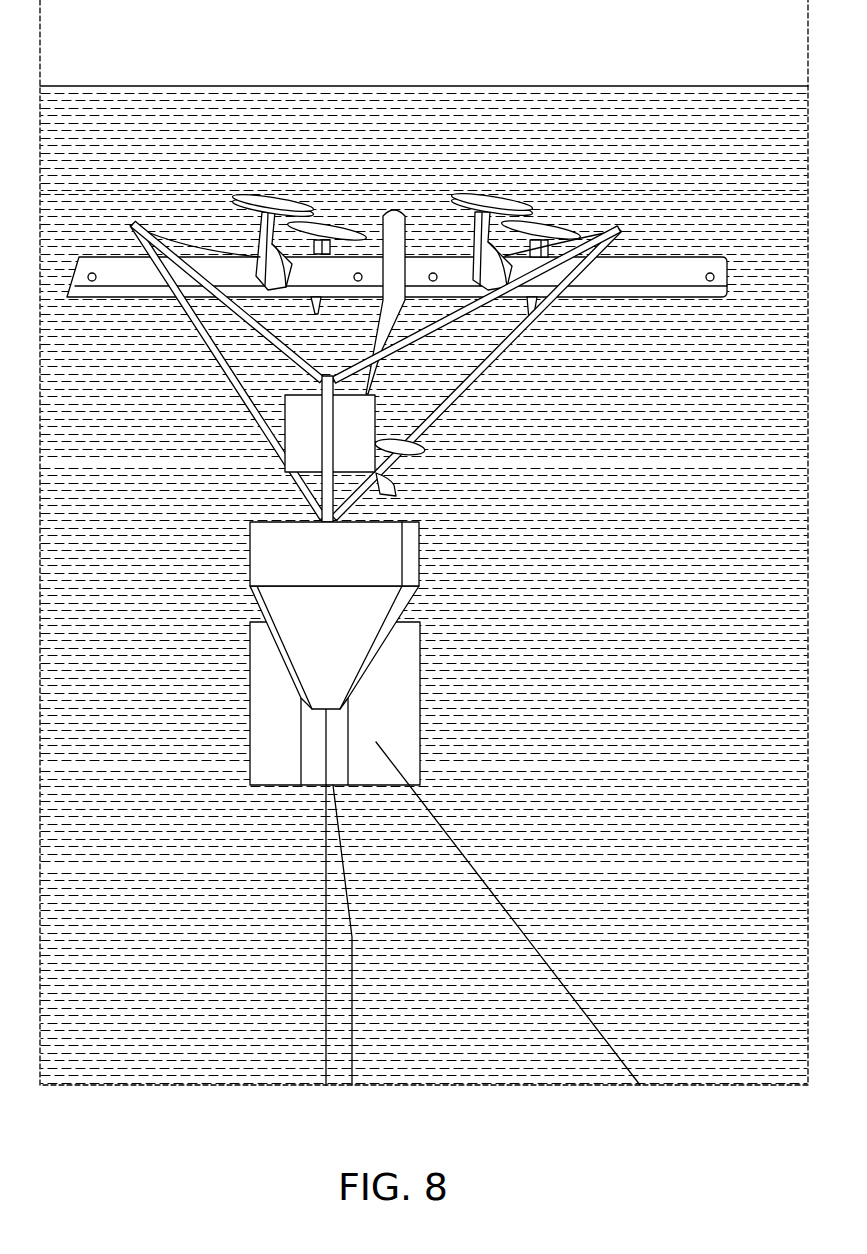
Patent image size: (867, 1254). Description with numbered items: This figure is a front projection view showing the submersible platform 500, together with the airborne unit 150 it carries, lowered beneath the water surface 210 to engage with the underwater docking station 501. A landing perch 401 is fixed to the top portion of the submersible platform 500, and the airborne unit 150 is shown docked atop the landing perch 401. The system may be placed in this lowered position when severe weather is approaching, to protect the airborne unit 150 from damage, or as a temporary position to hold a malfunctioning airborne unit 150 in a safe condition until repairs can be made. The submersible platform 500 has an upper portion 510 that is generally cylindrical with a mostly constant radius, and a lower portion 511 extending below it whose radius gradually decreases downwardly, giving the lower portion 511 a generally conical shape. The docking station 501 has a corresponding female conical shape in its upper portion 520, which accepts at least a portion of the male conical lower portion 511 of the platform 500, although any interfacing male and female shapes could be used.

The water surface 210 is at (194, 84).
The landing perch 401 is at (397, 325).
The airborne unit 150 is at (495, 192).
The submersible platform 500 is at (307, 615).
The upper portion 510 is at (419, 553).
The lower portion 511 is at (342, 657).
The underwater docking station 501 is at (260, 694).
The upper portion 520 is at (267, 638).